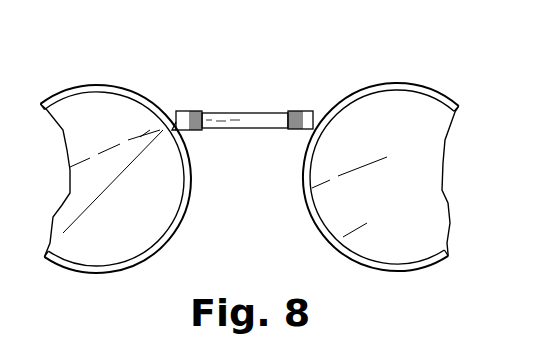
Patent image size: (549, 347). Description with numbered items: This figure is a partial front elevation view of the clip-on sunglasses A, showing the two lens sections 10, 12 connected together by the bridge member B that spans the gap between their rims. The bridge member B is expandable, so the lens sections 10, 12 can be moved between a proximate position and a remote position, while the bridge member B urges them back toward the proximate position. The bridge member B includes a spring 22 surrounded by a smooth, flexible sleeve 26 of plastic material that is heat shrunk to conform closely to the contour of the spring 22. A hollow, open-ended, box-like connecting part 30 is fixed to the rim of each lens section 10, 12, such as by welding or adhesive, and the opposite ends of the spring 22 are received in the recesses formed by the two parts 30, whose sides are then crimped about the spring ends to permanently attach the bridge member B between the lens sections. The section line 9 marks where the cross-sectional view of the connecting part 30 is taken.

The section line 9- 9 is at (140, 113).
The lens section 10 is at (115, 179).
The lens section 12 is at (381, 177).
The spring 22 is at (195, 130).
The sleeve 26 is at (272, 128).
The connecting part 30 is at (176, 110).
The clip-on sunglasses A is at (442, 76).
The bridge member B is at (255, 108).